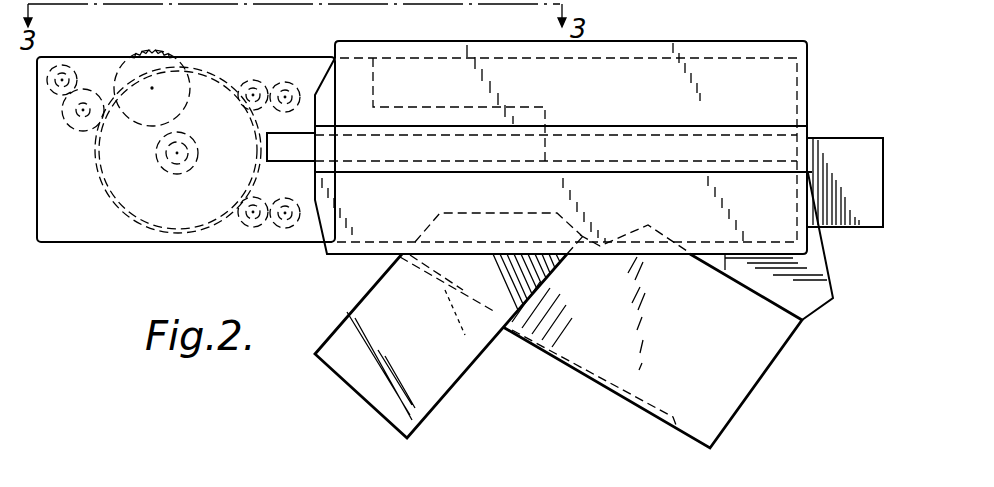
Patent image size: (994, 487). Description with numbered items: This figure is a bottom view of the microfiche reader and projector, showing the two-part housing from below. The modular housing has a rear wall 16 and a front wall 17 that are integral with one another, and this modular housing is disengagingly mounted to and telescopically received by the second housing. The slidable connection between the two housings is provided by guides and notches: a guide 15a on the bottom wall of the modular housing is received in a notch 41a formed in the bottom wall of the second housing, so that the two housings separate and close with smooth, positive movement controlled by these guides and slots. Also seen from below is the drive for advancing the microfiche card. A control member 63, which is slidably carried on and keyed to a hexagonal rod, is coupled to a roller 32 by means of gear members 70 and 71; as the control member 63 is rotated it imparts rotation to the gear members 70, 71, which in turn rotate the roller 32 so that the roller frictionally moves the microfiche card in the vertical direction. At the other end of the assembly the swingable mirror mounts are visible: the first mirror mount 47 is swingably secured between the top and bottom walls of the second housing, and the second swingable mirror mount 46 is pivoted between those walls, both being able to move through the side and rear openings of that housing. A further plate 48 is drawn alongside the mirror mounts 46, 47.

The rear wall 16 is at (203, 242).
The front wall 17 is at (305, 58).
The control member 63 is at (72, 68).
The gear member 70 is at (96, 92).
The gear member 71 is at (200, 70).
The roller 32 is at (254, 80).
The notch 41a is at (782, 127).
The guide 15a is at (787, 153).
The first mirror mount 47 is at (828, 263).
The second swingable mirror mount 46 is at (583, 380).
The plate 48 is at (760, 390).